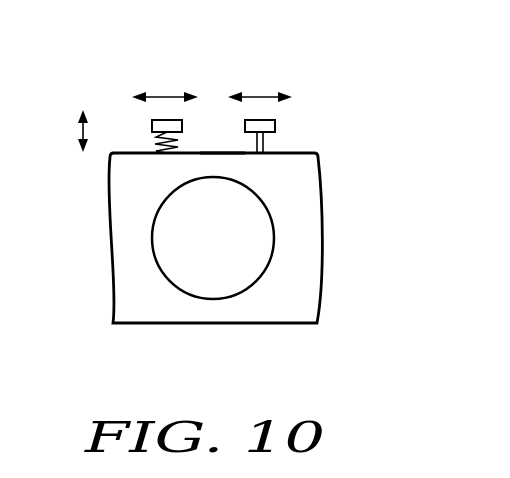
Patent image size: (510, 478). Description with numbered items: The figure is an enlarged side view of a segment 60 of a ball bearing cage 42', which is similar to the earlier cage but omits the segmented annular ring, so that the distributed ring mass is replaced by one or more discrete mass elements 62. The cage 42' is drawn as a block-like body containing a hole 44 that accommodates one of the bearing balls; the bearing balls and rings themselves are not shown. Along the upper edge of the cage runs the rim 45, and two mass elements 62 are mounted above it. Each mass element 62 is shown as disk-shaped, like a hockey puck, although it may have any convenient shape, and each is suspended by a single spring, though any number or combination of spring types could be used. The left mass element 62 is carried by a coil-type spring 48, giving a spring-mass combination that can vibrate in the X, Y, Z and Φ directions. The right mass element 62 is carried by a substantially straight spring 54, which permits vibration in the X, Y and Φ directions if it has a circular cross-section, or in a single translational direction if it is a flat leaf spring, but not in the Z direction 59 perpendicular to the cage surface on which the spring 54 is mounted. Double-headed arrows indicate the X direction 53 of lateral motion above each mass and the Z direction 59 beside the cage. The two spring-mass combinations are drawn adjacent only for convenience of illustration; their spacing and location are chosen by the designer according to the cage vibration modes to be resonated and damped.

The ball cage 42' is at (191, 238).
The hole 44 is at (202, 251).
The rim 45 is at (300, 154).
The spring 48 is at (149, 148).
The X direction 53 is at (168, 95).
The substantially straight spring 54 is at (263, 142).
The Z direction 59 is at (78, 128).
The segment 60 is at (140, 347).
The discrete mass element 62 is at (152, 125).